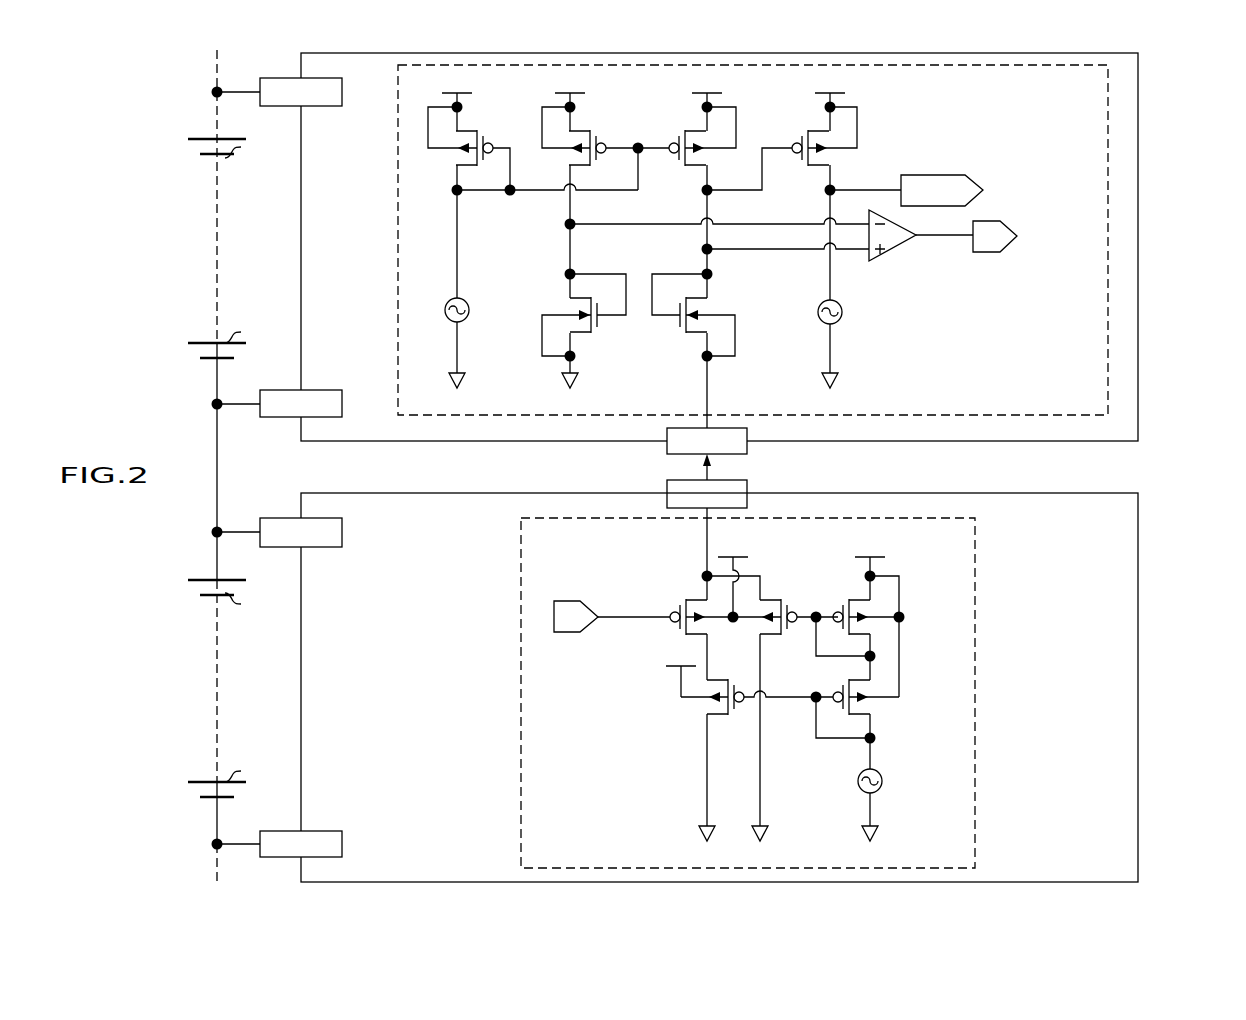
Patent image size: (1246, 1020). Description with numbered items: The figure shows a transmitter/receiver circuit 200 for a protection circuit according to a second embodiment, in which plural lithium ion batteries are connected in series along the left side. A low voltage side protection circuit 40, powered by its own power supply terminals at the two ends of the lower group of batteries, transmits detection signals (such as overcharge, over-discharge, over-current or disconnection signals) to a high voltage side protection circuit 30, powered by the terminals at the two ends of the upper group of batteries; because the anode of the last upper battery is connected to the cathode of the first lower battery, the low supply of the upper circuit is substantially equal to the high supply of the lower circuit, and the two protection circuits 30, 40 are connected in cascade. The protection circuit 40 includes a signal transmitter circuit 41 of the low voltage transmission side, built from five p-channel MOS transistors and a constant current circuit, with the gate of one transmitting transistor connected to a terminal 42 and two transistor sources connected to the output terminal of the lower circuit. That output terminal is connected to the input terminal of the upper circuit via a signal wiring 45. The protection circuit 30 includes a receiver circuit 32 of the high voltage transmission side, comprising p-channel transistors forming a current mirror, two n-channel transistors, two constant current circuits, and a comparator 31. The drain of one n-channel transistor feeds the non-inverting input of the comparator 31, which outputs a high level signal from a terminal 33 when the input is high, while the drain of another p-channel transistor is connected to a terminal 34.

The transmitter/receiver circuit 200 is at (1240, 82).
The high voltage side protection circuit 30 is at (1138, 248).
The comparator 31 is at (897, 250).
The receiver circuit 32 is at (398, 129).
The terminal 33 is at (985, 253).
The terminal 34 is at (936, 175).
The low voltage side protection circuit 40 is at (1138, 688).
The signal transmitter circuit 41 is at (520, 582).
The terminal 42 is at (574, 601).
The signal wiring 45 is at (710, 473).